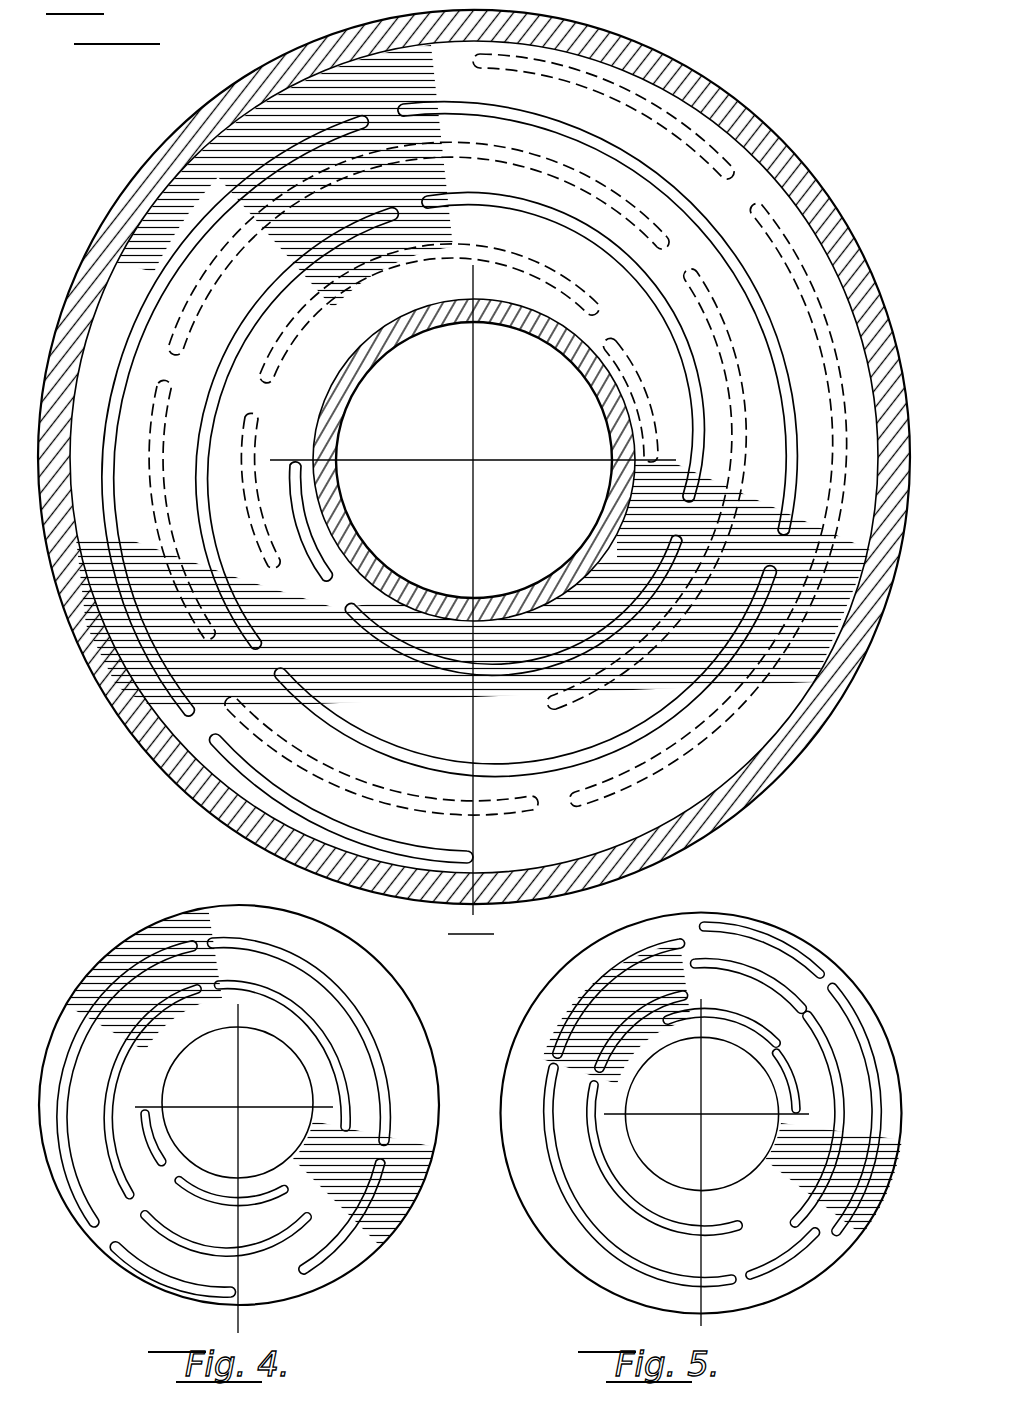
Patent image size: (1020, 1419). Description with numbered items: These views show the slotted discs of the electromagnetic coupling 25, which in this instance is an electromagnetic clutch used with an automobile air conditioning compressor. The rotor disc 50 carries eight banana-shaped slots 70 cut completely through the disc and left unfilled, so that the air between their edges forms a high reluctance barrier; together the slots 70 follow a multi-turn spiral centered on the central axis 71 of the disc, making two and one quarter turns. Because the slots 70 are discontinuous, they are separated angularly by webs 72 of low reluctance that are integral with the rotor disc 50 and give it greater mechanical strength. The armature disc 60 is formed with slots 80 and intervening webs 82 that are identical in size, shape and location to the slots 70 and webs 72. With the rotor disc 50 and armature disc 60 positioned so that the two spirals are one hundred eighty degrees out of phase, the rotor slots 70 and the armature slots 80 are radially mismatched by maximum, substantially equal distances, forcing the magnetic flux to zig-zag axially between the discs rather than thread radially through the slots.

In FIG. 3, the electromagnetic coupling 25 is at (680, 40).
In FIG. 3, the rotor disc 50 is at (829, 608).
In FIG. 4, the rotor disc 50 is at (132, 945).
In FIG. 3, the armature disc 60 is at (761, 718).
In FIG. 5, the armature disc 60 is at (595, 953).
In FIG. 3, the slots 70 is at (210, 217).
In FIG. 4, the slots 70 is at (120, 1044).
In FIG. 3, the central axis 71 is at (478, 458).
In FIG. 4, the central axis 71 is at (240, 1107).
In FIG. 5, the central axis 71 is at (699, 1114).
In FIG. 4, the webs 72 is at (195, 937).
In FIG. 3, the slots 80 is at (443, 150).
In FIG. 5, the slots 80 is at (660, 1006).
In FIG. 5, the webs 82 is at (836, 986).